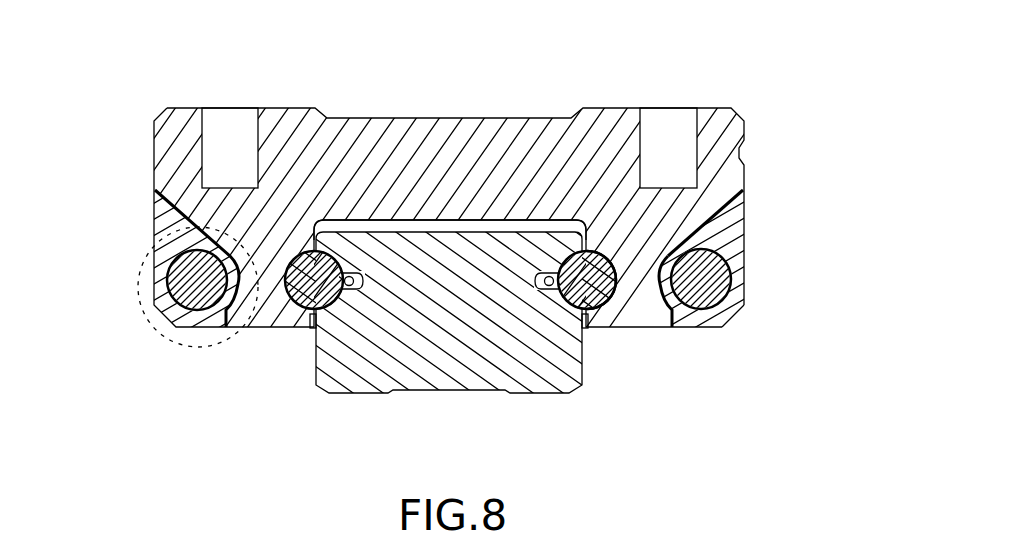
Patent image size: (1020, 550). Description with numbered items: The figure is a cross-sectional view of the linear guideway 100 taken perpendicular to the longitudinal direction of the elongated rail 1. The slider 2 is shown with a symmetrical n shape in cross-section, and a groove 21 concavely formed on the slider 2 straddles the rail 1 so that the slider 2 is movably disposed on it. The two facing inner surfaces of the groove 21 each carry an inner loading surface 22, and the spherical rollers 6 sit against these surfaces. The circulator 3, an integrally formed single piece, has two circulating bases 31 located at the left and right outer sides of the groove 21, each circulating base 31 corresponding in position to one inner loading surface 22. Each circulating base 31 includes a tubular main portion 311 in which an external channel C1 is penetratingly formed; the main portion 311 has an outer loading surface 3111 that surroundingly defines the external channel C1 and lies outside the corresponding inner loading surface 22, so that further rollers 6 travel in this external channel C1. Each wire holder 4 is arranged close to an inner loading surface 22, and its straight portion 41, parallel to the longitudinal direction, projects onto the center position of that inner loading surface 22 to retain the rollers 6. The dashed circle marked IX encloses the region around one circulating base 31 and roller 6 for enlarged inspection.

The linear guideway 100 is at (201, 29).
The rail 1 is at (307, 374).
The slider 2 is at (543, 109).
The groove 21 is at (429, 212).
The inner loading surface 22 is at (611, 294).
The circulator 3 is at (146, 214).
The circulating base 31 is at (833, 226).
The main portion 311 is at (724, 243).
The outer loading surface 3111 is at (737, 281).
The wire holder 4 is at (573, 441).
The straight portion 41 is at (550, 286).
The roller 6 is at (601, 314).
The external channel C1 is at (721, 309).
The detail view region IX is at (148, 323).